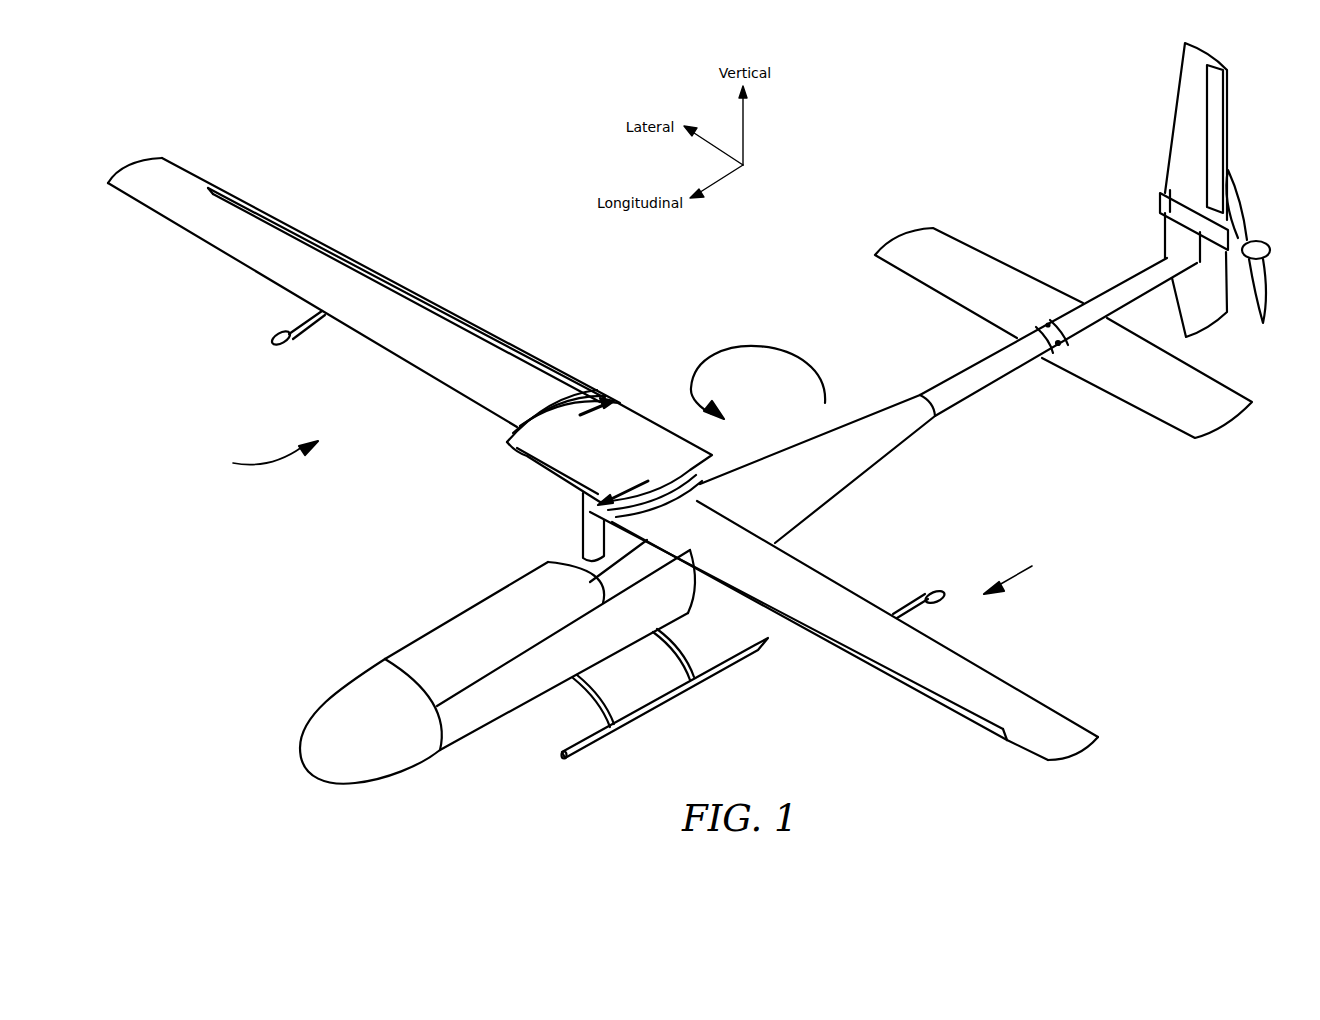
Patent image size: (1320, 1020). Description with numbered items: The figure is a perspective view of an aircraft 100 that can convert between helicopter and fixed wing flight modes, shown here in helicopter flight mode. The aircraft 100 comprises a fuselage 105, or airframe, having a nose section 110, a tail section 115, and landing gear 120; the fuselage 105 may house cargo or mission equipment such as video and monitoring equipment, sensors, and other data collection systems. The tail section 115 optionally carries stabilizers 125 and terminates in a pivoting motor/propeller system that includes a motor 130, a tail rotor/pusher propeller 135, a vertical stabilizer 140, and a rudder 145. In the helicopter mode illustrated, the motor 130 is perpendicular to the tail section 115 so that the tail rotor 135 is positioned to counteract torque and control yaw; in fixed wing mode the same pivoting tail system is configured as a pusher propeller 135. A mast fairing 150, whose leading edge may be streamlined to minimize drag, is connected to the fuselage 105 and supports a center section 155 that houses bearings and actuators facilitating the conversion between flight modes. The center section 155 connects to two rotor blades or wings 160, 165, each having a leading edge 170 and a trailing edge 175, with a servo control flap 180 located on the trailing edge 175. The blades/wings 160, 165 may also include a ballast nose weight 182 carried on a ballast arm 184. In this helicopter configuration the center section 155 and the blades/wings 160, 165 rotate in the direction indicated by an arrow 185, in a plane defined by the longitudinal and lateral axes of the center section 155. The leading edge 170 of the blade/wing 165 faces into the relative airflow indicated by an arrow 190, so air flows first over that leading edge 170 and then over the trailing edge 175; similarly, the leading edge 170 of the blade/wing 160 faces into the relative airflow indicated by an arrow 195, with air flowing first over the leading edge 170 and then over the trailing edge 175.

The aircraft 100 is at (481, 144).
The fuselage 105 is at (455, 620).
The nose section 110 is at (333, 700).
The tail section 115 is at (975, 386).
The landing gear 120 is at (718, 668).
The stabilizers 125 is at (1160, 400).
The motor 130 is at (1180, 218).
The tail rotor/pusher propeller 135 is at (1262, 245).
The vertical stabilizer 140 is at (1183, 92).
The rudder 145 is at (1220, 118).
The mast fairing 150 is at (580, 531).
The center section 155 is at (638, 415).
The blade/wing 160 is at (848, 600).
The blade/wing 165 is at (312, 285).
The leading edge 170 is at (415, 361).
The trailing edge 175 is at (200, 176).
The servo control flap 180 is at (430, 300).
The ballast nose weight 182 is at (272, 343).
The ballast arm 184 is at (318, 318).
The arrow 185 is at (756, 343).
The arrow 190 is at (252, 456).
The arrow 195 is at (1032, 566).